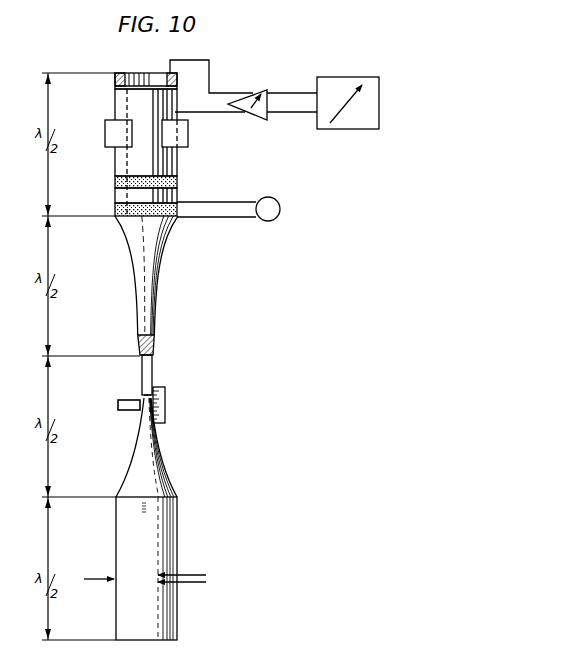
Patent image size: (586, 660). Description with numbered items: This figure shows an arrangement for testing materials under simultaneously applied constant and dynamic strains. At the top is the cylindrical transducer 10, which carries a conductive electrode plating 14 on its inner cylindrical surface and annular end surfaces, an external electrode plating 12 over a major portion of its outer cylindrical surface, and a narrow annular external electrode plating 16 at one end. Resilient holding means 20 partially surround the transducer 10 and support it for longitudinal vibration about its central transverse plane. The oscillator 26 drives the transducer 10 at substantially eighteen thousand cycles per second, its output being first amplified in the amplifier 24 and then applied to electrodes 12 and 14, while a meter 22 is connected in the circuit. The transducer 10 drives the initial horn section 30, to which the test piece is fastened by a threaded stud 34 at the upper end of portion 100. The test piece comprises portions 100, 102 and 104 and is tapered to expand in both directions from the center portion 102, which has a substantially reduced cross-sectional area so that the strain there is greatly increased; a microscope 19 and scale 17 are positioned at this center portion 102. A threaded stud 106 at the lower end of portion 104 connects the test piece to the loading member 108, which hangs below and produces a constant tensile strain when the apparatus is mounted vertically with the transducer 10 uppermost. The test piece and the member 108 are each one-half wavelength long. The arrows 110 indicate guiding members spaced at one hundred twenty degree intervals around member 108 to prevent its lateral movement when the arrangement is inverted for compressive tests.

The transducer 10 is at (115, 90).
The external conductive electrode plating 12 is at (115, 106).
The conductive electrode plating 14 is at (167, 79).
The external conductive electrode plating 16 is at (115, 200).
The scale 17 is at (167, 395).
The microscope 19 is at (118, 400).
The resilient holding means 20 is at (105, 134).
The meter 22 is at (281, 217).
The amplifier 24 is at (254, 94).
The oscillator 26 is at (380, 90).
The initial horn section 30 is at (160, 262).
The threaded stud 34 is at (155, 350).
The test piece portion 100 is at (153, 364).
The center portion of test piece 102 is at (145, 406).
The test piece portion 104 is at (161, 463).
The threaded stud 106 is at (158, 507).
The loading member 108 is at (175, 617).
The guiding members 110 is at (190, 575).